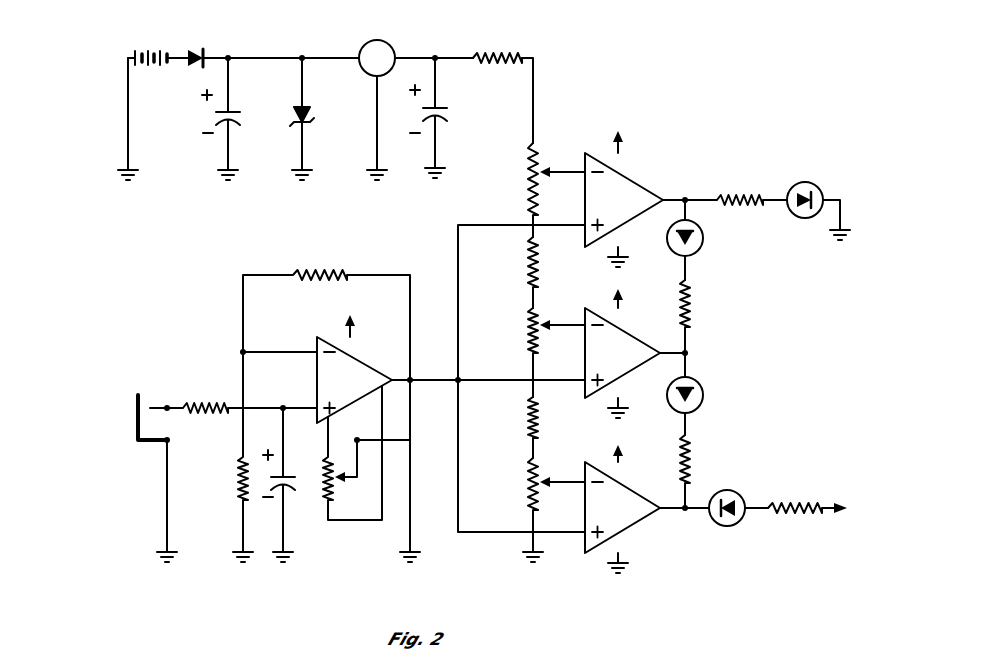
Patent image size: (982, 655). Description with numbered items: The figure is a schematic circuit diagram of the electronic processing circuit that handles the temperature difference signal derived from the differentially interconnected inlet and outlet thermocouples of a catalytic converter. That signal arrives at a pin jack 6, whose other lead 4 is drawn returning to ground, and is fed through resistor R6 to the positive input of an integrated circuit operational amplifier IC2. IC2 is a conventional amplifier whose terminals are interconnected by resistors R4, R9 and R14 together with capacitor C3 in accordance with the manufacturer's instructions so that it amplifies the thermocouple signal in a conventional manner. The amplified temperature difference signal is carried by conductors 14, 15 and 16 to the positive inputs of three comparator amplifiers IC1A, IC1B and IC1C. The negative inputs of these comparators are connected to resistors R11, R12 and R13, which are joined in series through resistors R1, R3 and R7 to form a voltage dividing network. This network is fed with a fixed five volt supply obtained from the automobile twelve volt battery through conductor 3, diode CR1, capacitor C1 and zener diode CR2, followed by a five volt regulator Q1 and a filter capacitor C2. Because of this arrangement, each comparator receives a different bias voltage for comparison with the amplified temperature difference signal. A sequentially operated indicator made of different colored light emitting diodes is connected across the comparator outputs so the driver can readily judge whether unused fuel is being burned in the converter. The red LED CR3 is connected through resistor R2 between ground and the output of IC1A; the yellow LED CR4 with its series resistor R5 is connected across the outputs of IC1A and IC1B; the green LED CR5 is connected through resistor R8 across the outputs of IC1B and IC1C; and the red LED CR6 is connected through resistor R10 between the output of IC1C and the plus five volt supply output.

The conductor 3 is at (182, 55).
The diode CR1 is at (188, 47).
The capacitor C1 is at (256, 97).
The zener diode CR2 is at (333, 98).
The 5 volt regulator Q1 is at (377, 110).
The filter capacitor C2 is at (447, 108).
The resistor R1 is at (478, 50).
The resistor R11 is at (530, 178).
The resistor R3 is at (528, 258).
The resistor R12 is at (528, 318).
The resistor R7 is at (538, 416).
The resistor R13 is at (528, 490).
The conductor 14 is at (458, 325).
The conductor 15 is at (470, 381).
The conductor 16 is at (458, 502).
The comparator amplifier IC1A is at (635, 199).
The comparator amplifier IC1B is at (635, 353).
The comparator amplifier IC1C is at (647, 509).
The resistor R2 is at (735, 195).
The light emitting diode CR3 is at (805, 182).
The light emitting diode CR4 is at (704, 238).
The resistor R5 is at (697, 305).
The light emitting diode CR5 is at (704, 395).
The resistor R8 is at (697, 455).
The light emitting diode CR6 is at (718, 524).
The resistor R10 is at (795, 500).
The resistor R4 is at (328, 272).
The integrated circuit operational amplifier IC2 is at (326, 369).
The pin jack 6 is at (148, 414).
The ground conductor 4 is at (168, 514).
The resistor R6 is at (208, 404).
The resistor R9 is at (238, 478).
The capacitor C3 is at (288, 477).
The resistor R14 is at (328, 498).